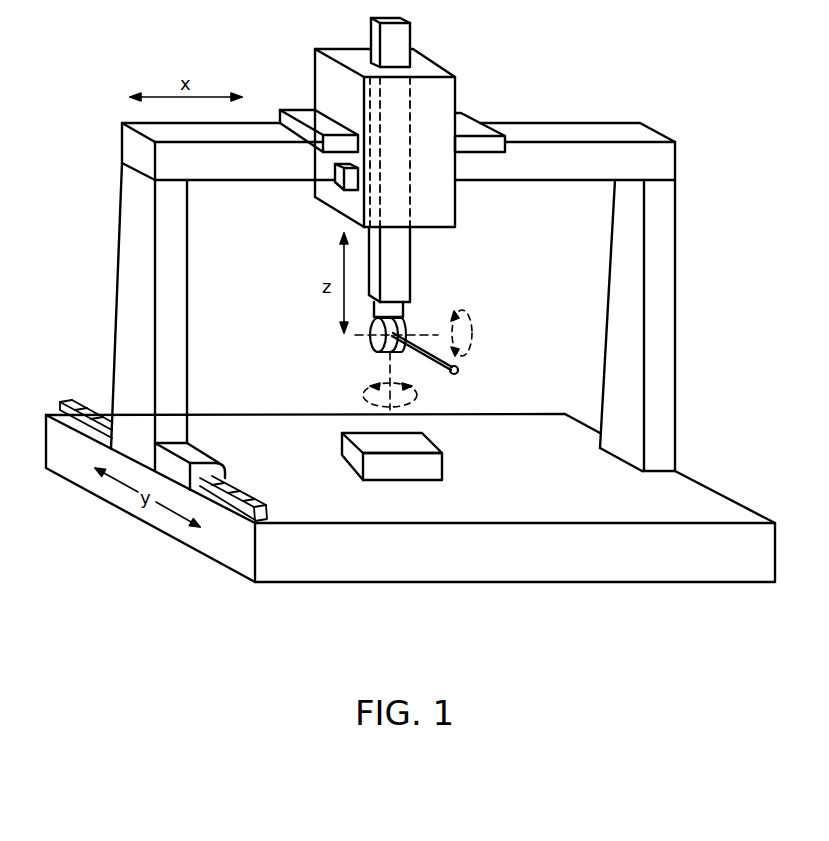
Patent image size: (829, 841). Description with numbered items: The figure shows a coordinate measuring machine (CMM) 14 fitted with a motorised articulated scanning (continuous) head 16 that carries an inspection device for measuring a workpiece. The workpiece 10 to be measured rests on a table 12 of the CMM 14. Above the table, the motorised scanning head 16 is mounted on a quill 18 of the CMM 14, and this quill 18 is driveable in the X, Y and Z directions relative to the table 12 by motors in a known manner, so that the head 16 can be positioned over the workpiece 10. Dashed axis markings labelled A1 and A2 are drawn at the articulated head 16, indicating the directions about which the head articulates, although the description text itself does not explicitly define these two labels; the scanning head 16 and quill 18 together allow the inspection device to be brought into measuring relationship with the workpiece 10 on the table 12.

The workpiece 10 is at (427, 470).
The table 12 is at (385, 568).
The coordinate measuring machine 14 is at (590, 81).
The motorised articulated scanning head 16 is at (364, 361).
The quill 18 is at (398, 263).
The first rotation axis A1 is at (409, 381).
The second rotation axis A2 is at (433, 333).